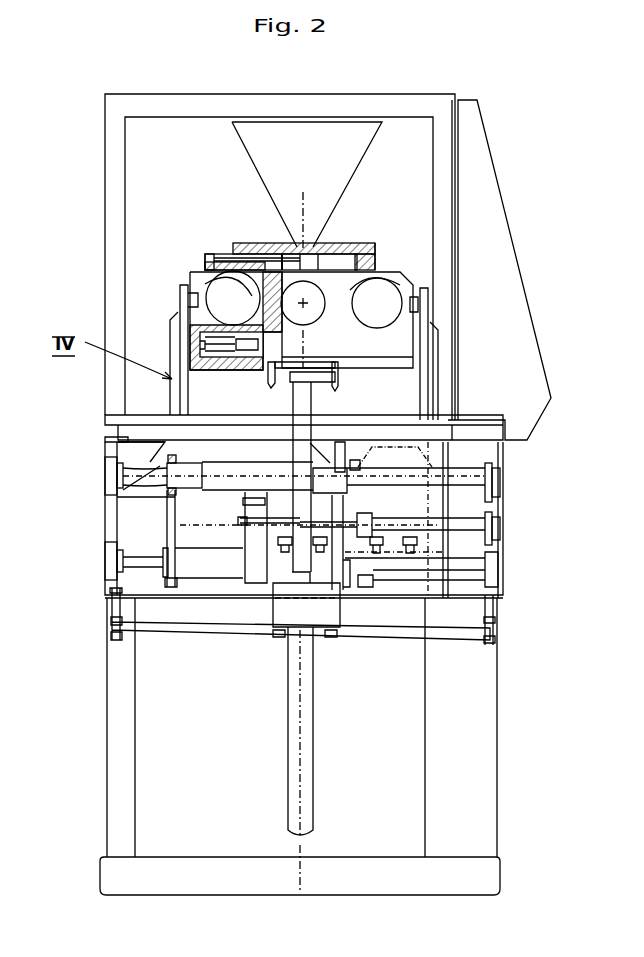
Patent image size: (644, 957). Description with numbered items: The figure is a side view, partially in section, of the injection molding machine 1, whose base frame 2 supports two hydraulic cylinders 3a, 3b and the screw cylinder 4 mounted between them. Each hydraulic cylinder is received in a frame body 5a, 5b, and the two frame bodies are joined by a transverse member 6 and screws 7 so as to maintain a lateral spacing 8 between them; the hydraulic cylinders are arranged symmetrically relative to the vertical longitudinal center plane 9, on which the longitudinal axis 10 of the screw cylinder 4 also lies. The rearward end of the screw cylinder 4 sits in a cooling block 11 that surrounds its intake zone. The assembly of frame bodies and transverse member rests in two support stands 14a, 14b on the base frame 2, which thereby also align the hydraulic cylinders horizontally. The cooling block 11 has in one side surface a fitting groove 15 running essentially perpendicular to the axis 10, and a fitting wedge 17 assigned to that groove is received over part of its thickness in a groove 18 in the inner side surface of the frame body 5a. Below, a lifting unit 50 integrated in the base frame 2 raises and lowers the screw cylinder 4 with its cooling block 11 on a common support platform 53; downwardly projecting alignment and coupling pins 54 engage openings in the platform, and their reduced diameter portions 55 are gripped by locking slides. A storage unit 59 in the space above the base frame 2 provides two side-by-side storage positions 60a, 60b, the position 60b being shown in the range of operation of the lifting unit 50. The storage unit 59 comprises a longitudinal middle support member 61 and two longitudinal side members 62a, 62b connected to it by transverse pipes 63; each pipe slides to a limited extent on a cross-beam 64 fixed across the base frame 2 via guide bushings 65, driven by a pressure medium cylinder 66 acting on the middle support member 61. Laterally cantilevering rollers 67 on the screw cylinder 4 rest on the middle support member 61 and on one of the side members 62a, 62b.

The injection molding machine 1 is at (155, 384).
The base frame 2 is at (108, 628).
The hydraulic cylinder 3a is at (218, 280).
The hydraulic cylinder 3b is at (410, 290).
The screw cylinder 4 is at (331, 245).
The frame body 5a is at (200, 283).
The frame body 5b is at (395, 285).
The transverse member 6 is at (262, 256).
The screws 7 is at (210, 256).
The lateral spacing 8 is at (334, 336).
The vertical longitudinal center plane 9 is at (300, 550).
The longitudinal axis 10 is at (367, 245).
The cooling block 11 is at (340, 350).
The support stand 14a is at (185, 322).
The support stand 14b is at (428, 317).
The fitting groove 15 is at (287, 250).
The fitting wedge 17 is at (308, 248).
The groove 18 is at (226, 258).
The lifting unit 50 is at (320, 655).
The support platform 53 is at (340, 372).
The alignment and coupling pins 54 is at (282, 382).
The reduced diameter portions 55 is at (285, 555).
The storage unit 59 is at (213, 453).
The storage position 60a is at (205, 560).
The storage position 60b is at (340, 600).
The longitudinal middle support member 61 is at (218, 452).
The longitudinal side member 62a is at (175, 497).
The longitudinal side member 62b is at (490, 500).
The transverse pipes 63 is at (175, 525).
The cross-beam 64 is at (110, 565).
The guide bushings 65 is at (165, 478).
The pressure medium cylinder 66 is at (470, 585).
The rollers 67 is at (252, 455).